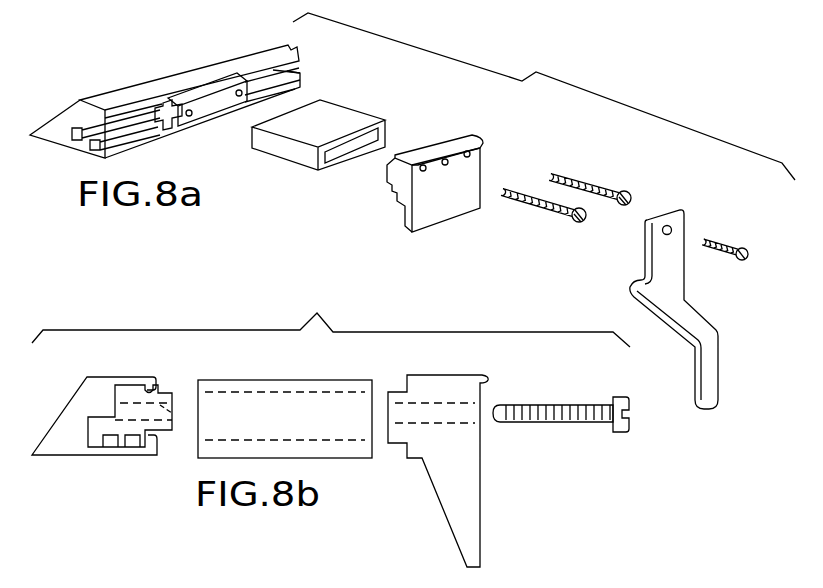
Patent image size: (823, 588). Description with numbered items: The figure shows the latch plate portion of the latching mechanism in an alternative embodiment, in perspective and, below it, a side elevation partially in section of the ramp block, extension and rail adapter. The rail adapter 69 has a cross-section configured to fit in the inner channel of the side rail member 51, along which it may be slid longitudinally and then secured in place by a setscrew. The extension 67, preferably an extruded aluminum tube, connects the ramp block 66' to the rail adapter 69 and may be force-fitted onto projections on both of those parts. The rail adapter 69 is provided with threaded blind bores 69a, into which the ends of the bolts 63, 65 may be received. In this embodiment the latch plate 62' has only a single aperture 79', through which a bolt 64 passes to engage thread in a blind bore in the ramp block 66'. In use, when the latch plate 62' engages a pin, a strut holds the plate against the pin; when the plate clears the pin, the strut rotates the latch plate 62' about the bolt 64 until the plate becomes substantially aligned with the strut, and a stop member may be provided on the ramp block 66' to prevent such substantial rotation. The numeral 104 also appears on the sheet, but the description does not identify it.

In FIG. 8A, the side rail member 51 is at (120, 88).
In FIG. 8B, the side rail member 51 is at (98, 378).
In FIG. 8A, the rail adapter 69 is at (210, 103).
In FIG. 8B, the rail adapter 69 is at (130, 390).
In FIG. 8B, the threaded blind bores 69a is at (168, 413).
In FIG. 8A, the extension 67 is at (338, 117).
In FIG. 8B, the extension 67 is at (292, 378).
In FIG. 8B, the ramp block 66' is at (445, 454).
In FIG. 8A, the bolt 63 is at (538, 204).
In FIG. 8B, the bolt 63 is at (557, 407).
In FIG. 8A, the bolt 65 is at (585, 182).
In FIG. 8A, the bolt 64 is at (722, 240).
In FIG. 8A, the aperture 79' is at (680, 199).
In FIG. 8A, the latch plate 62' is at (707, 309).
In FIG. 8B, the sheet numeral 104 is at (261, 584).